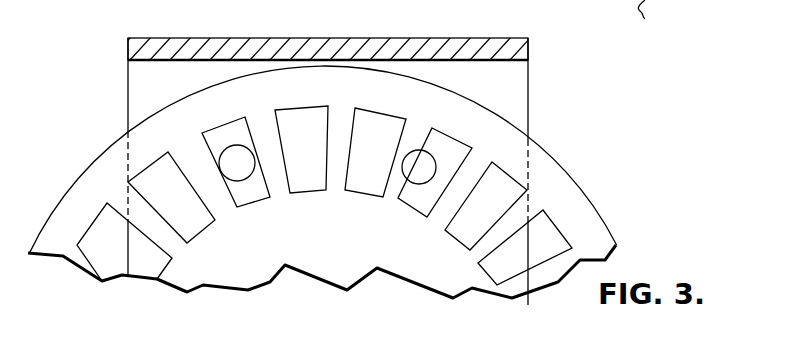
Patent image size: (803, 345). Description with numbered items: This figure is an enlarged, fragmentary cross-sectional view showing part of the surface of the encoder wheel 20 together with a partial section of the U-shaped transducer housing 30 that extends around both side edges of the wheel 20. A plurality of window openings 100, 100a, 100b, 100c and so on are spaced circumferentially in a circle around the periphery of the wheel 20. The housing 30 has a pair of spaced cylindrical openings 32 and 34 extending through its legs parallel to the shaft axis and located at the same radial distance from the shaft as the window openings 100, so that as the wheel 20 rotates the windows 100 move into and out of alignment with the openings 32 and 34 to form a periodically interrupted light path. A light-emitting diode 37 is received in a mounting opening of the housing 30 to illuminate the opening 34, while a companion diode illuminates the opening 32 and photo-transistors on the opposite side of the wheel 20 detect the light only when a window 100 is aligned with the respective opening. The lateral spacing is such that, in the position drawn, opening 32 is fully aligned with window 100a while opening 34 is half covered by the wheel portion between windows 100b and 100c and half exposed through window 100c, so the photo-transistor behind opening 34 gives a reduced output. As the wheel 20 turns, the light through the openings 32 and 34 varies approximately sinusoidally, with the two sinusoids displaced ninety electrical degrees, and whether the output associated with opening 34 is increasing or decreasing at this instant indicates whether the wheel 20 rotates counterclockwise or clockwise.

The wheel 20 is at (556, 176).
The transducer housing 30 is at (200, 37).
The cylindrical opening 32 is at (233, 148).
The cylindrical opening 34 is at (406, 168).
The light-emitting diode 37 is at (651, 16).
The window opening 100 is at (202, 237).
The window opening 100a is at (242, 208).
The window opening 100b is at (357, 196).
The window opening 100c is at (407, 217).